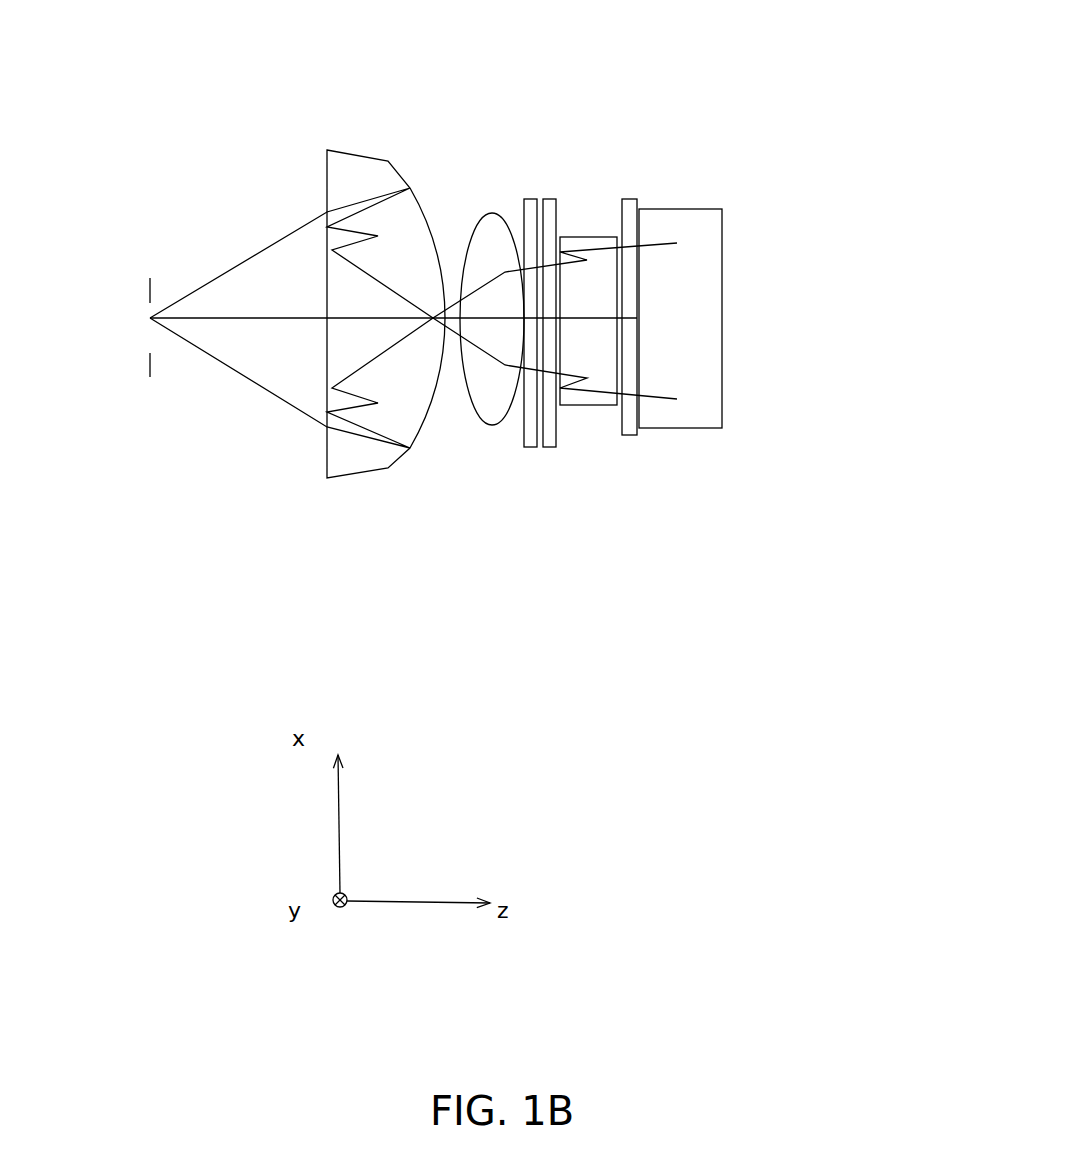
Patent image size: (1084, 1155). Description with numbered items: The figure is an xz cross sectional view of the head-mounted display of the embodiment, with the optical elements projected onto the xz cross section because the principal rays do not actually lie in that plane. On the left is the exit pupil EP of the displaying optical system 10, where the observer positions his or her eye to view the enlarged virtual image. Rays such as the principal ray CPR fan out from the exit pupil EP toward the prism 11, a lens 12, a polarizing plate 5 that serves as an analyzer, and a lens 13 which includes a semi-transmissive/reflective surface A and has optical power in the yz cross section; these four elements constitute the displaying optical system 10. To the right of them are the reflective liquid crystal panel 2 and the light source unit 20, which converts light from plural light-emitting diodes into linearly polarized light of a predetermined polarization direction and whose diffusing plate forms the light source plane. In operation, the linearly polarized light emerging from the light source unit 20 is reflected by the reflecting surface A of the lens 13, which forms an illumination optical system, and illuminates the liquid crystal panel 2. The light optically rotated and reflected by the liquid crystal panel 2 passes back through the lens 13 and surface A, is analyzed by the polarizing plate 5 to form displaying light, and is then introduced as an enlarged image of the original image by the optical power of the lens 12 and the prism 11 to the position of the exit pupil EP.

The displaying optical system 10 is at (463, 168).
The prism 11 is at (343, 458).
The lens 12 is at (478, 418).
The polarizing plate 5 is at (528, 436).
The lens 13 is at (555, 432).
The semi-transmissive/reflective surface A is at (560, 435).
The reflective liquid crystal panel 2 is at (573, 400).
The light source unit 20 is at (723, 210).
The exit pupil EP is at (150, 282).
The chief principal ray CPR is at (295, 318).